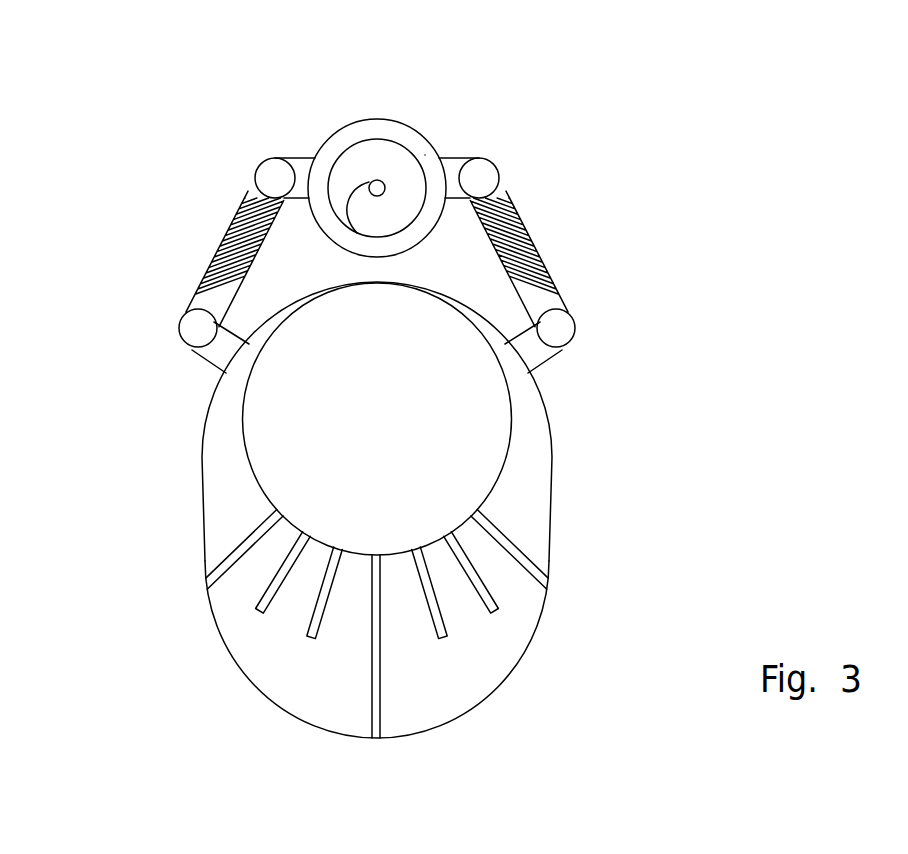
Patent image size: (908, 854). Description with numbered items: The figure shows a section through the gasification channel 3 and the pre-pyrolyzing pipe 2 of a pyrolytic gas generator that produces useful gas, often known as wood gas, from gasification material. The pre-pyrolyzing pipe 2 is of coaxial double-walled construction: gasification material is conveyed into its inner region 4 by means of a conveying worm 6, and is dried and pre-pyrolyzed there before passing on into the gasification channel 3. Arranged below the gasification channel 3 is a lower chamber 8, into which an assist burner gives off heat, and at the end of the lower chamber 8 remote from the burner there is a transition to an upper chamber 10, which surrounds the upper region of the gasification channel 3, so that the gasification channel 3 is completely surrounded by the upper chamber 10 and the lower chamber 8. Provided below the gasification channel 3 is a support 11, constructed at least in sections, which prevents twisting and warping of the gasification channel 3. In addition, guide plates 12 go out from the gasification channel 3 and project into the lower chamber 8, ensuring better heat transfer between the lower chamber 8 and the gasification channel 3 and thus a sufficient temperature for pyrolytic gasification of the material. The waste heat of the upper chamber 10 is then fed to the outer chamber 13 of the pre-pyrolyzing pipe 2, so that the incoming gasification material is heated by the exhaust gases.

The pre-pyrolyzing pipe 2 is at (377, 118).
The gasification channel 3 is at (487, 414).
The inner region 4 is at (390, 157).
The conveying worm 6 is at (354, 190).
The lower chamber 8 is at (297, 690).
The upper chamber 10 is at (222, 458).
The support 11 is at (232, 562).
The guide plates 12 is at (258, 612).
The outer chamber 13 is at (425, 155).